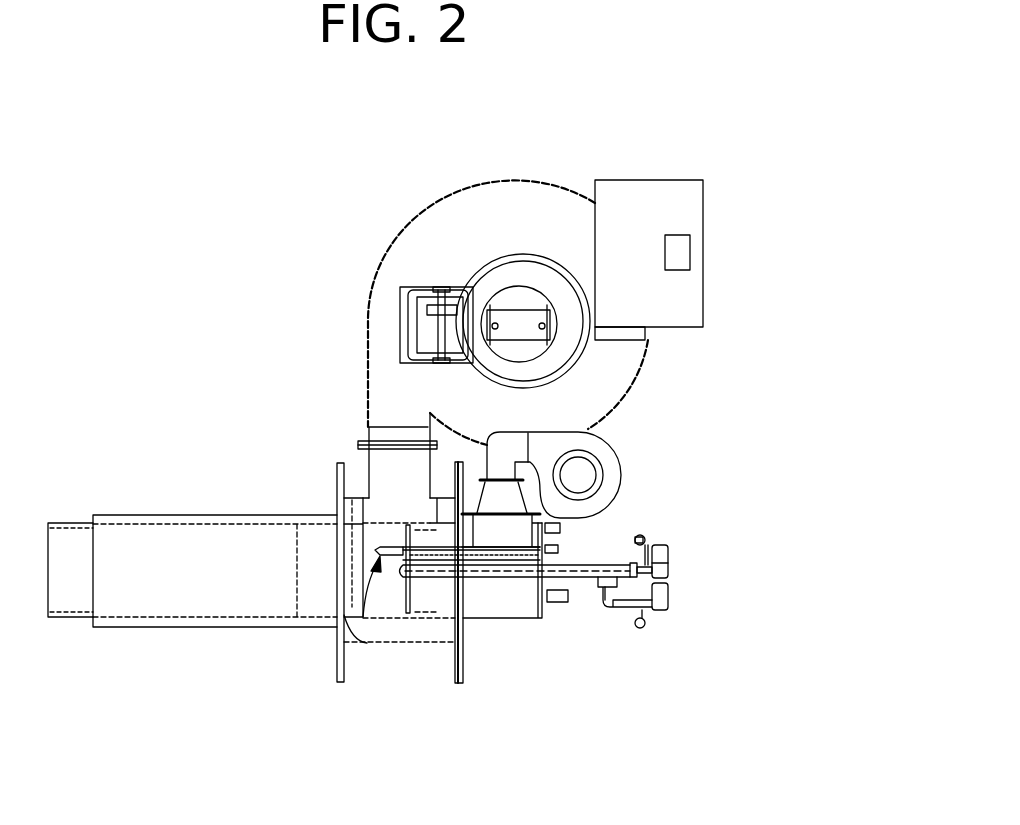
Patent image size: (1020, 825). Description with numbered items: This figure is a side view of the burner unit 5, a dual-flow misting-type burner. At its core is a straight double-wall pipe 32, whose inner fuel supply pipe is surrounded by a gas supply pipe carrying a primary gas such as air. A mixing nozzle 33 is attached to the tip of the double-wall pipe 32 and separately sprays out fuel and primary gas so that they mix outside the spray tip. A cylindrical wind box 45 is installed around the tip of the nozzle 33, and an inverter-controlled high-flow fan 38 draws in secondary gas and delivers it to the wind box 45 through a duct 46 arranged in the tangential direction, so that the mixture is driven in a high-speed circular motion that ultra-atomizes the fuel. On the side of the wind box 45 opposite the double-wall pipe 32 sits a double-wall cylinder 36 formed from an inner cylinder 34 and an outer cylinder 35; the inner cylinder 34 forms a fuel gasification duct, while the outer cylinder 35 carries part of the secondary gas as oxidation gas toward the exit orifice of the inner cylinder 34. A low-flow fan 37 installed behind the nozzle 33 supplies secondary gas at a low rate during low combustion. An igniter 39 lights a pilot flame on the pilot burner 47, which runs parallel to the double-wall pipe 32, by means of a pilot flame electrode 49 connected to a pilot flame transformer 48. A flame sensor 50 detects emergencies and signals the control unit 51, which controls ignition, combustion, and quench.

The burner unit 5 is at (122, 288).
The double-wall pipe 32 is at (518, 580).
The mixing nozzle 33 is at (403, 568).
The inner cylinder 34 is at (70, 618).
The outer cylinder 35 is at (190, 628).
The double-wall cylinder 36 is at (140, 498).
The low-flow fan 37 is at (622, 465).
The high-flow fan 38 is at (440, 228).
The igniter 39 is at (369, 645).
The wind box 45 is at (427, 628).
The duct 46 is at (374, 468).
The pilot burner 47 is at (392, 546).
The pilot flame transformer 48 is at (400, 320).
The pilot flame electrode 49 is at (485, 578).
The flame sensor 50 is at (557, 592).
The control unit 51 is at (640, 190).